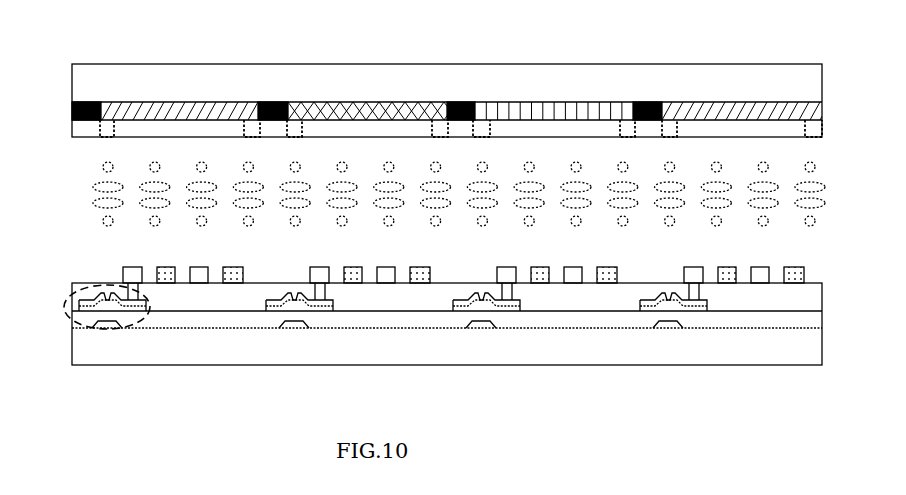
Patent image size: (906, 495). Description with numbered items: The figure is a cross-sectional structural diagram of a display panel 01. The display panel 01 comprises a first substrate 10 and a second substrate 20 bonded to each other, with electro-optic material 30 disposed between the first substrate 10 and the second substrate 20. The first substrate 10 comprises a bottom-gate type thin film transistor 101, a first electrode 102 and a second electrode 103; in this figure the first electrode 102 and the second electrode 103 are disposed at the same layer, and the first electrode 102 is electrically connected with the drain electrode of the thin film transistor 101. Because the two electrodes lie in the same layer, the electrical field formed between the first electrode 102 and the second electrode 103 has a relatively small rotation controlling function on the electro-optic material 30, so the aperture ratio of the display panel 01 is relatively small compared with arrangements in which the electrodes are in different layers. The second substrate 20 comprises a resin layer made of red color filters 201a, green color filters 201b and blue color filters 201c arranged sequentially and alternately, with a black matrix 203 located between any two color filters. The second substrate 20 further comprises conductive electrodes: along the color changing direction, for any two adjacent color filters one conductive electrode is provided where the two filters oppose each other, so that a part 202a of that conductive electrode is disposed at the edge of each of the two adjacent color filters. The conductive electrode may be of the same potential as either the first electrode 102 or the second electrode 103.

The display panel 01 is at (393, 38).
The second substrate 20 is at (62, 65).
The electro-optic material 30 is at (88, 163).
The first substrate 10 is at (57, 265).
The thin film transistor 101 is at (112, 332).
The first electrode 102 is at (133, 270).
The second electrode 103 is at (232, 268).
The red color filter 201a is at (383, 108).
The green color filter 201b is at (595, 108).
The blue color filter 201c is at (198, 108).
The part of conductive electrode 202a is at (252, 120).
The black matrix 203 is at (648, 102).